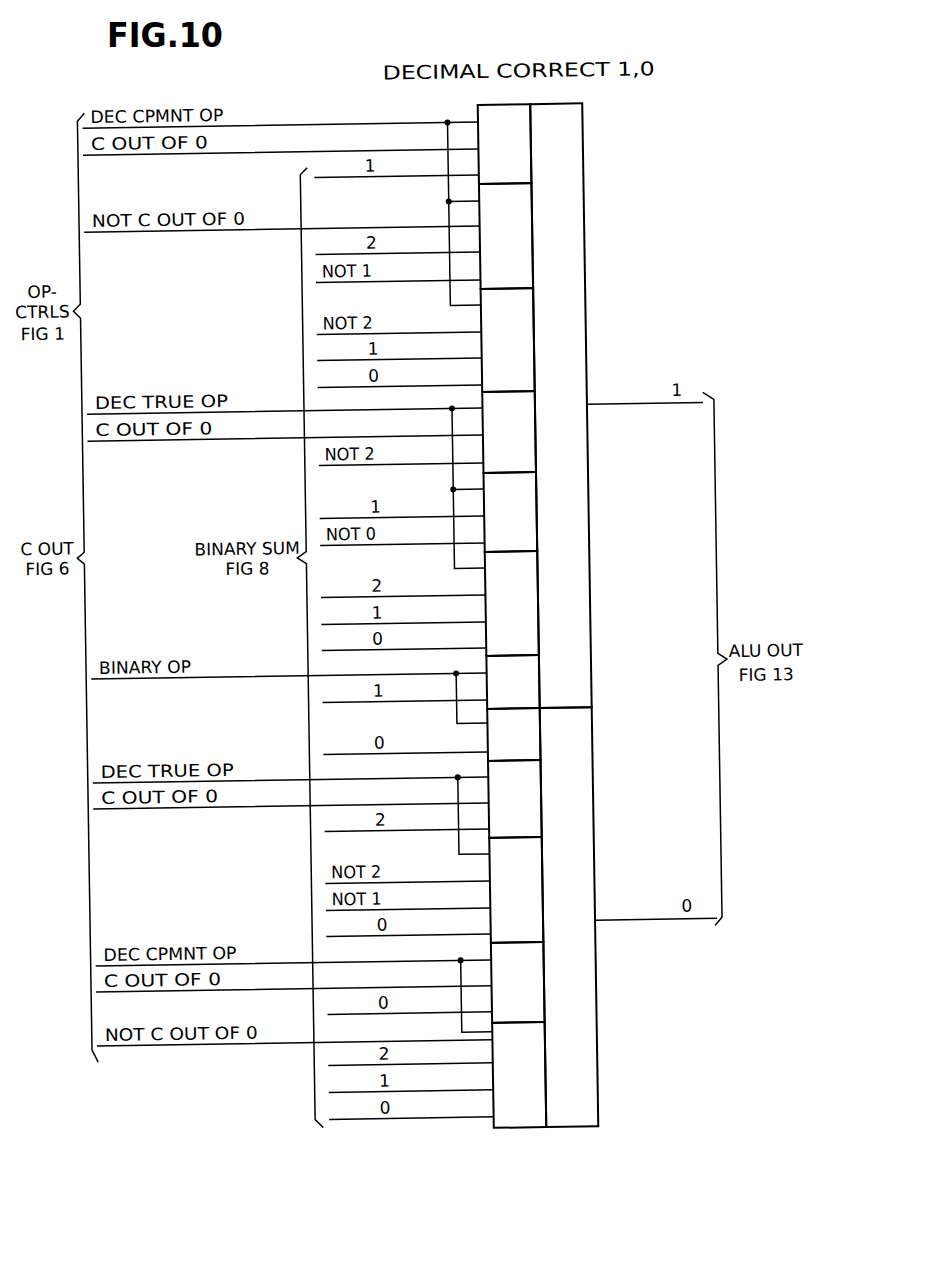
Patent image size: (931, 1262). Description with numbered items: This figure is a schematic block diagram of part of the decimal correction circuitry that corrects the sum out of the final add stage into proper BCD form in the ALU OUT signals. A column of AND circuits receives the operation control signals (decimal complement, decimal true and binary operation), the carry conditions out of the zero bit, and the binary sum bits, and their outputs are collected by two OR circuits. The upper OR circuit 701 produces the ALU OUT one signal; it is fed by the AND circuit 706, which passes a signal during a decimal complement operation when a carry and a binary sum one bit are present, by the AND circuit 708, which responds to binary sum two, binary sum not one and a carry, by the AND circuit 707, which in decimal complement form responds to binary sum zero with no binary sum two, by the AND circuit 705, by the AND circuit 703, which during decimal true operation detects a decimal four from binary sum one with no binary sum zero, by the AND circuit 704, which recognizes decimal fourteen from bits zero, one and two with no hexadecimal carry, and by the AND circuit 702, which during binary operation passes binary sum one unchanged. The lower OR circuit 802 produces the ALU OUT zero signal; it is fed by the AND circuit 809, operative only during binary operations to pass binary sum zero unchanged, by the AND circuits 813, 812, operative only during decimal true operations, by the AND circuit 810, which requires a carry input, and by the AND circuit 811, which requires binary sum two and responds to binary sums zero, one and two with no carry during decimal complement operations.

The OR circuit 701 is at (595, 289).
The AND circuit 702 is at (485, 670).
The AND circuit 703 is at (485, 505).
The AND circuit 704 is at (485, 584).
The AND circuit 705 is at (485, 404).
The AND circuit 706 is at (485, 114).
The AND circuit 707 is at (485, 321).
The AND circuit 708 is at (485, 194).
The OR circuit 802 is at (591, 1020).
The AND circuit 809 is at (485, 737).
The AND circuit 810 is at (485, 957).
The AND circuit 811 is at (533, 1129).
The AND circuit 812 is at (485, 873).
The AND circuit 813 is at (485, 771).